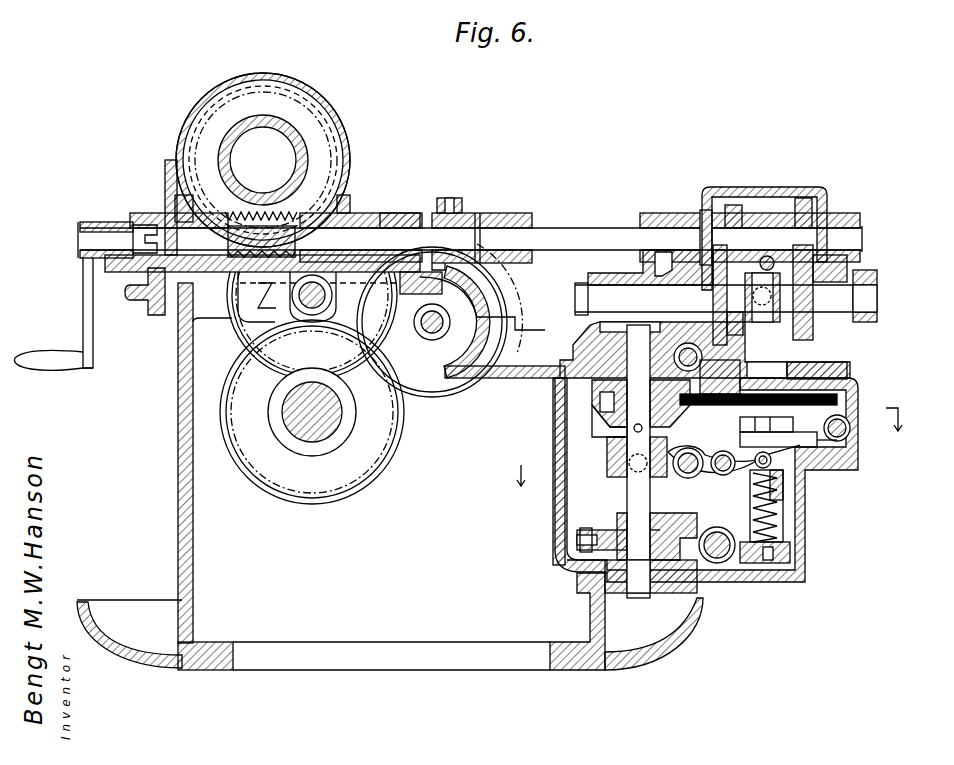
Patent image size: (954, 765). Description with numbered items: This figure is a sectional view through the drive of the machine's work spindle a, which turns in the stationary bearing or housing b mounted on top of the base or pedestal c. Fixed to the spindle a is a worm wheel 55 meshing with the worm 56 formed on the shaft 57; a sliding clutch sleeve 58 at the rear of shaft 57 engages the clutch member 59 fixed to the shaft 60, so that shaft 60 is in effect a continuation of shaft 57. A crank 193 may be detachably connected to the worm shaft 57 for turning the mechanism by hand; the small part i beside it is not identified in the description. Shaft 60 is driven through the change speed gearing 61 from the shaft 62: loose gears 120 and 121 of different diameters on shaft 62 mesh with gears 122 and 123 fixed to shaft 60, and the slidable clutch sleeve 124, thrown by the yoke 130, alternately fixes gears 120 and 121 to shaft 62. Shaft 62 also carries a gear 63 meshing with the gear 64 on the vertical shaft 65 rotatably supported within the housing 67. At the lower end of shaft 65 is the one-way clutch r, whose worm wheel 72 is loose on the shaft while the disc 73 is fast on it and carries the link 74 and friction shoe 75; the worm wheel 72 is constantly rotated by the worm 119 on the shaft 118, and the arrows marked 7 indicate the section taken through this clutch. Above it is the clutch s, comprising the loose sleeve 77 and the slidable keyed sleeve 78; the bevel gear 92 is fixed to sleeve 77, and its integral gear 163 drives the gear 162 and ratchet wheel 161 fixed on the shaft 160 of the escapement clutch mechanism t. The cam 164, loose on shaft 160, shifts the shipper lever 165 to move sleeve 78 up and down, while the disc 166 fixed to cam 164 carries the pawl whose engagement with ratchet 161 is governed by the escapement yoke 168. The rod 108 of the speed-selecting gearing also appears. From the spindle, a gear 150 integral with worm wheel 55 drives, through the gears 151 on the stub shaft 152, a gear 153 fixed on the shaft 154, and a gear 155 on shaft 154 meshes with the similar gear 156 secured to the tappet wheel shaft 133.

The base or pedestal c is at (178, 483).
The worm wheel 55 is at (320, 138).
The gear 150 is at (232, 102).
The work spindle a is at (266, 120).
The bearing or housing b is at (315, 103).
The shaft 60 is at (572, 232).
The crank 193 is at (80, 291).
The bracket i is at (150, 316).
The worm 56 is at (272, 266).
The shaft 57 is at (383, 228).
The clutch member or sleeve 58 is at (477, 212).
The clutch member 59 is at (508, 214).
The change speed gearing 61 is at (822, 192).
The gear 122 is at (732, 205).
The gear 123 is at (803, 198).
The yoke 130 is at (767, 256).
The loose gear 120 is at (730, 335).
The loose gear 121 is at (803, 322).
The slidable clutch sleeve 124 is at (763, 323).
The shaft 62 is at (600, 296).
The gear 63 is at (655, 265).
The gear 64 is at (585, 347).
The worm wheel 72 is at (703, 355).
The housing 67 is at (600, 340).
The shaft 160 is at (812, 364).
The gear 162 is at (840, 400).
The ratchet wheel 161 is at (800, 425).
The escapement yoke 168 is at (852, 430).
The escapement clutch mechanism t is at (820, 444).
The disc 166 is at (770, 455).
The rod 108 is at (715, 470).
The cam 164 is at (785, 476).
The shipper lever 165 is at (775, 505).
The section line 7 is at (708, 446).
The vertical shaft 65 is at (627, 493).
The gear 163 is at (592, 398).
The bevel gear 92 is at (600, 410).
The sleeve 77 is at (600, 432).
The clutch s is at (604, 440).
The slidable sleeve 78 is at (607, 455).
The disc 73 is at (680, 528).
The over running or one way clutch r is at (677, 518).
The friction shoe 75 is at (580, 536).
The link 74 is at (590, 575).
The worm 119 is at (718, 528).
The shaft 118 is at (717, 560).
The gear 156 is at (452, 393).
The tappet wheel shaft 133 is at (432, 328).
The gears 151 is at (300, 318).
The stub shaft 152 is at (311, 305).
The gear 153 is at (292, 500).
The gear 155 is at (345, 497).
The shaft 154 is at (305, 428).